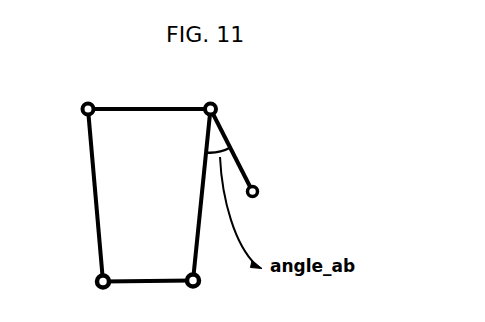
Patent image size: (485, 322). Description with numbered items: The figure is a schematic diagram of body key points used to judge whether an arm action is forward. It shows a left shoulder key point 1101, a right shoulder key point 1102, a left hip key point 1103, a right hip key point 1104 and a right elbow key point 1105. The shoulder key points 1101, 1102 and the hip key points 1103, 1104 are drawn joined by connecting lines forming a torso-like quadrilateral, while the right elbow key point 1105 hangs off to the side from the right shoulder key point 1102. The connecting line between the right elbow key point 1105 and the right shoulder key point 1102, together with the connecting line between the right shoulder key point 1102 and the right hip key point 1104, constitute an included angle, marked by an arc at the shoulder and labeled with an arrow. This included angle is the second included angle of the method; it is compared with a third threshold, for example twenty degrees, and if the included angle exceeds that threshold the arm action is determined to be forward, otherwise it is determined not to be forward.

The left shoulder key point 1101 is at (75, 95).
The right shoulder key point 1102 is at (219, 95).
The left hip key point 1103 is at (90, 294).
The right hip key point 1104 is at (197, 293).
The right elbow key point 1105 is at (277, 192).